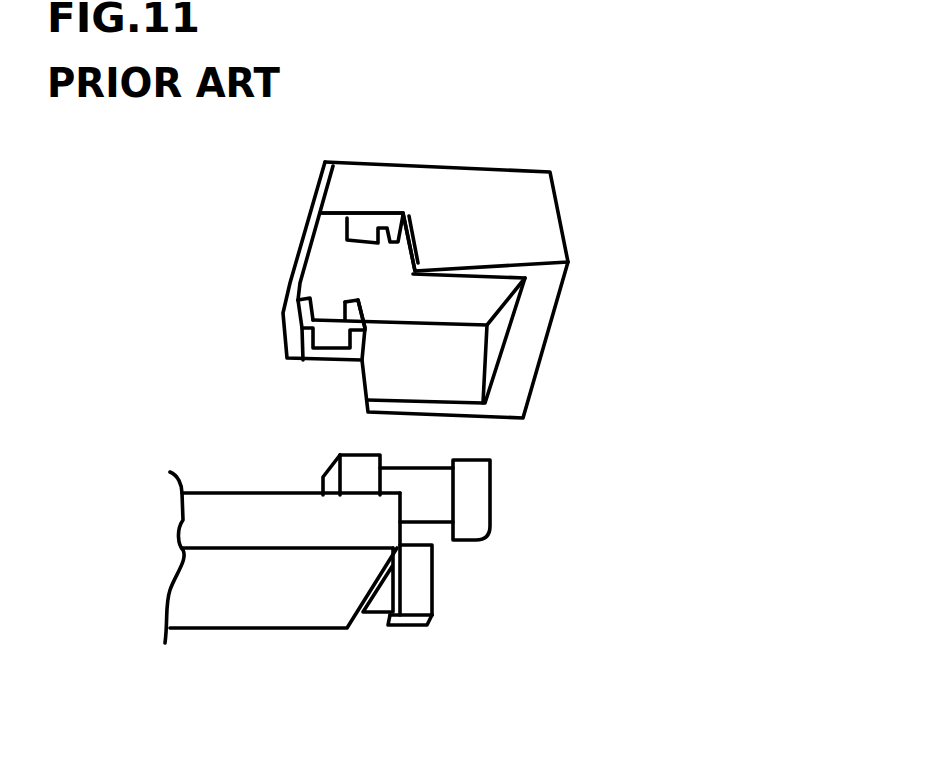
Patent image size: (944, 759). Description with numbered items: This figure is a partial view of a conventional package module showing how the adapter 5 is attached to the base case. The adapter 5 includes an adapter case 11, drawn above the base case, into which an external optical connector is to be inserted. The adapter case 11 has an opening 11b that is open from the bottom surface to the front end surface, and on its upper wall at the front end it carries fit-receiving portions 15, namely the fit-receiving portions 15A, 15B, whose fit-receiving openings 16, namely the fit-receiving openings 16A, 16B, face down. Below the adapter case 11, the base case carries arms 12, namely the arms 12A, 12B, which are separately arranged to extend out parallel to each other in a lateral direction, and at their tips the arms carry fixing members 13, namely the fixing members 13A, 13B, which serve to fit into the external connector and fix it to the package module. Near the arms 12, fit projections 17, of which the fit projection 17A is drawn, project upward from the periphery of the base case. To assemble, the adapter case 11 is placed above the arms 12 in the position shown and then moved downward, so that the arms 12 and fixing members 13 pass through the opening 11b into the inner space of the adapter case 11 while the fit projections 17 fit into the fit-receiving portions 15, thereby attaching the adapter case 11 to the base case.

The adapter 5 is at (523, 192).
The adapter case 11 is at (548, 257).
The opening 11b is at (470, 387).
The arms 12 is at (457, 604).
The arm 12A is at (437, 507).
The arm 12B is at (372, 613).
The fixing members 13 is at (538, 577).
The fixing member 13A is at (478, 512).
The fixing member 13B is at (408, 627).
The fit-receiving portions 15 is at (225, 255).
The fit-receiving portion 15A is at (335, 212).
The fit-receiving portion 15B is at (292, 331).
The fit-receiving openings 16 is at (220, 310).
The fit-receiving opening 16A is at (358, 238).
The fit-receiving opening 16B is at (328, 346).
The fit projections 17 is at (227, 458).
The fit projection 17A is at (360, 465).